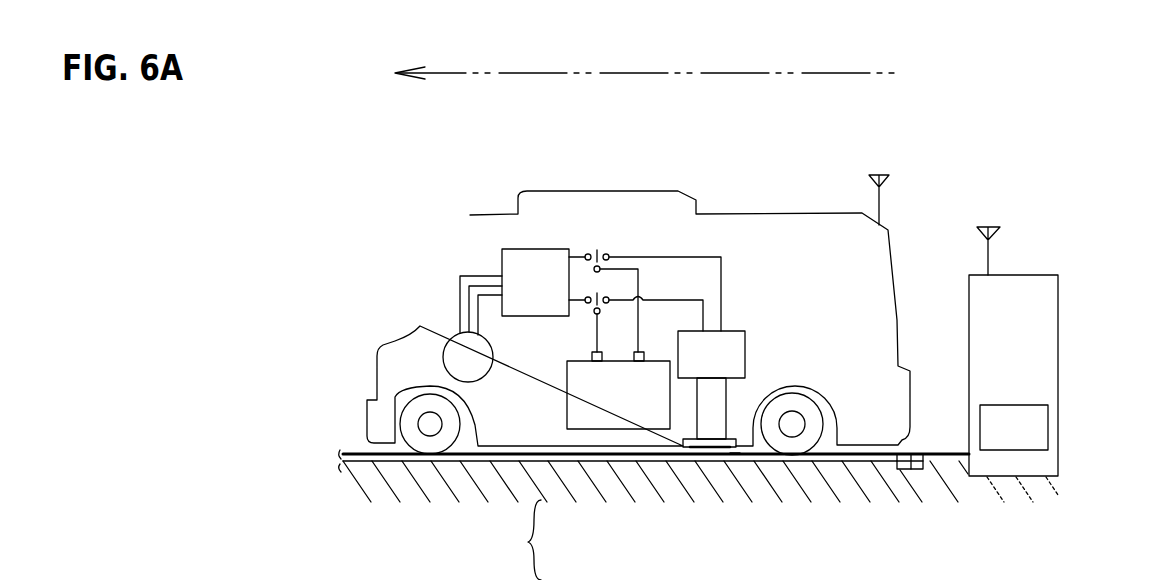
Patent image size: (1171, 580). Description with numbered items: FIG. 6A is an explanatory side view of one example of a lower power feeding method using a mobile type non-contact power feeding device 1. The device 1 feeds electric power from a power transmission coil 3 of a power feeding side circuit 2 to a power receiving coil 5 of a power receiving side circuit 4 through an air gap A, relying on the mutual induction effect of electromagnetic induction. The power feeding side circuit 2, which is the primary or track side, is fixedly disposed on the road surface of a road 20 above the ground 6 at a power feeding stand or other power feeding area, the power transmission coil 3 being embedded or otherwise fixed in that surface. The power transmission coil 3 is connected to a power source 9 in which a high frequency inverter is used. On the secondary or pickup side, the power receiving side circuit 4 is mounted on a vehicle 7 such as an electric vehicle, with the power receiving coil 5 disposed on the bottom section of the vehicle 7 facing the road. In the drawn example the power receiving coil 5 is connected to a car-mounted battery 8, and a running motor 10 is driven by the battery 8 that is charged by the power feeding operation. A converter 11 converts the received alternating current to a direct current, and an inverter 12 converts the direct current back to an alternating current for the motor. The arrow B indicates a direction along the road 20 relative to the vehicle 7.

The non-contact power feeding device 1 is at (526, 540).
The power feeding side circuit 2 is at (606, 566).
The power transmission coil 3 is at (713, 448).
The power receiving side circuit 4 is at (606, 525).
The power receiving coil 5 is at (691, 441).
The ground 6 is at (226, 434).
The vehicle 7 is at (432, 177).
The battery 8 is at (567, 387).
The power source 9 is at (1058, 319).
The running motor 10 is at (493, 345).
The converter 11 is at (745, 340).
The inverter 12 is at (540, 249).
The road 20 is at (322, 482).
The air gap A is at (733, 450).
The traveling direction B is at (648, 62).